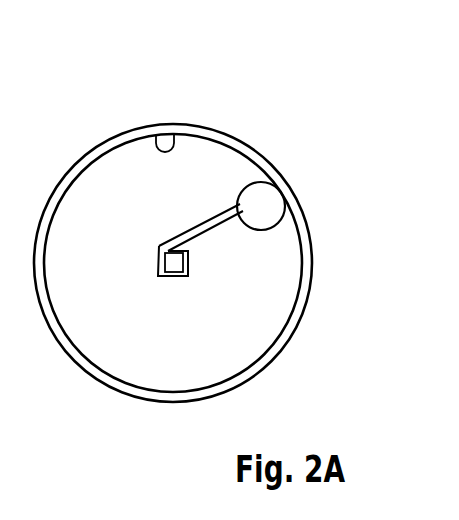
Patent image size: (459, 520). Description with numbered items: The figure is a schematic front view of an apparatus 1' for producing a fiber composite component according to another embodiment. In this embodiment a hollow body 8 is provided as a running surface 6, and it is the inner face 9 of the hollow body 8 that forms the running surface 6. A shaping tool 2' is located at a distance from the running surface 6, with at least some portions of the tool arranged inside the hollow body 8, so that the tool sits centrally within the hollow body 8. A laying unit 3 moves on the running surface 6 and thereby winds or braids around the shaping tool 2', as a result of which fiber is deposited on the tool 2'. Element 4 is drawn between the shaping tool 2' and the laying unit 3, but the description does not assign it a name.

The apparatus 1' is at (193, 201).
The shaping tool 2' is at (255, 277).
The laying unit 3 is at (273, 202).
The pointer arm 4 is at (203, 220).
The running surface 6 is at (113, 149).
The hollow body 8 is at (75, 164).
The inner face 9 is at (166, 150).